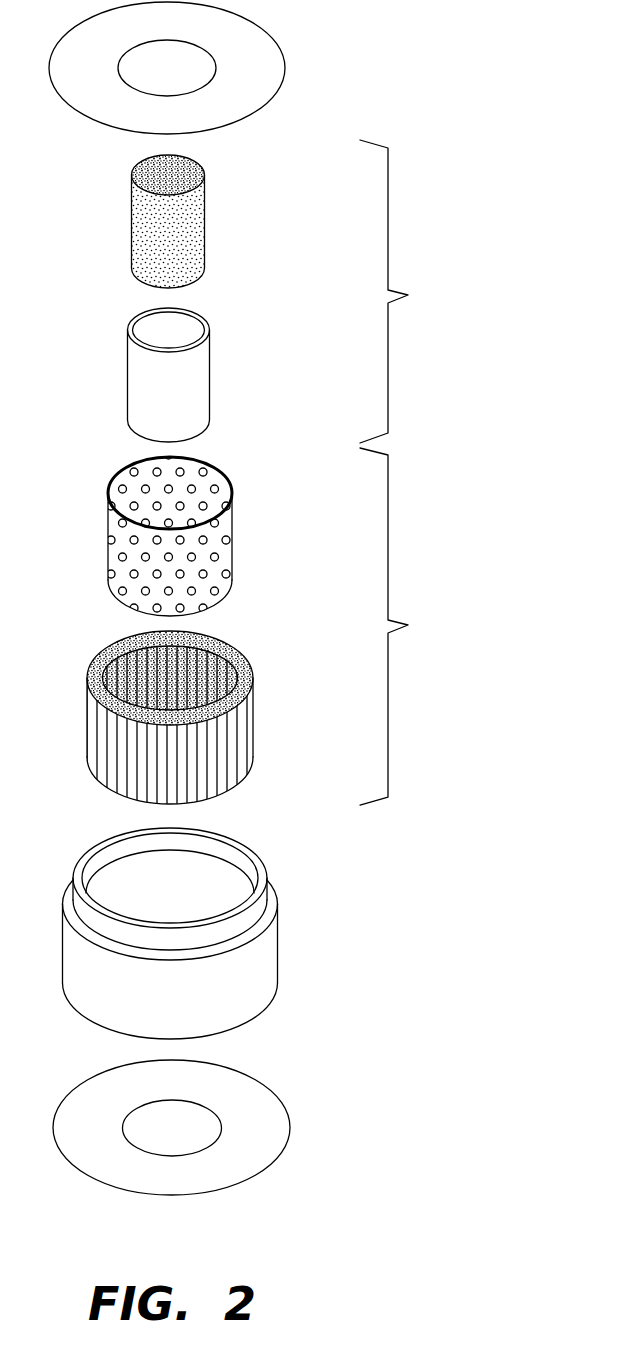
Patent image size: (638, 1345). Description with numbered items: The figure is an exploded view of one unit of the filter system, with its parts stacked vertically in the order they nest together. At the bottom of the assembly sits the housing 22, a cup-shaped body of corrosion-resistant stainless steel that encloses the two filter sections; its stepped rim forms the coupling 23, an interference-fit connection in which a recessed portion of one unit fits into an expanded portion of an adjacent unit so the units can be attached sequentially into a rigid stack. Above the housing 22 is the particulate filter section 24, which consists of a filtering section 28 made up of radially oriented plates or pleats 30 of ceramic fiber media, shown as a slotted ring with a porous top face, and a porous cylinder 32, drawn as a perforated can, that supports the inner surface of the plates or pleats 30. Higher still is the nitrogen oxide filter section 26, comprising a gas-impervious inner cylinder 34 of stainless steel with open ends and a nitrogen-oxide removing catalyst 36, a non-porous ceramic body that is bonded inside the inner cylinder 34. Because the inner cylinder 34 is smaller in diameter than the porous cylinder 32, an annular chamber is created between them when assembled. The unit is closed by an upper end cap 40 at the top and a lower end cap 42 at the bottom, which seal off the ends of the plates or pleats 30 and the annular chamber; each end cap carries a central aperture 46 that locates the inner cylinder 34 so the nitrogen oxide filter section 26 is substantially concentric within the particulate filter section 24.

The housing 22 is at (278, 955).
The coupling 23 is at (290, 904).
The particulate filter section 24 is at (408, 625).
The nitrogen oxide filter section 26 is at (408, 295).
The filtering section 28 is at (253, 745).
The plates or pleats 30 is at (245, 727).
The porous cylinder 32 is at (223, 550).
The inner cylinder 34 is at (198, 377).
The nitrogen-oxide removing catalyst 36 is at (198, 237).
The upper end cap 40 is at (285, 67).
The lower end cap 42 is at (290, 1127).
The central aperture 46 is at (183, 57).